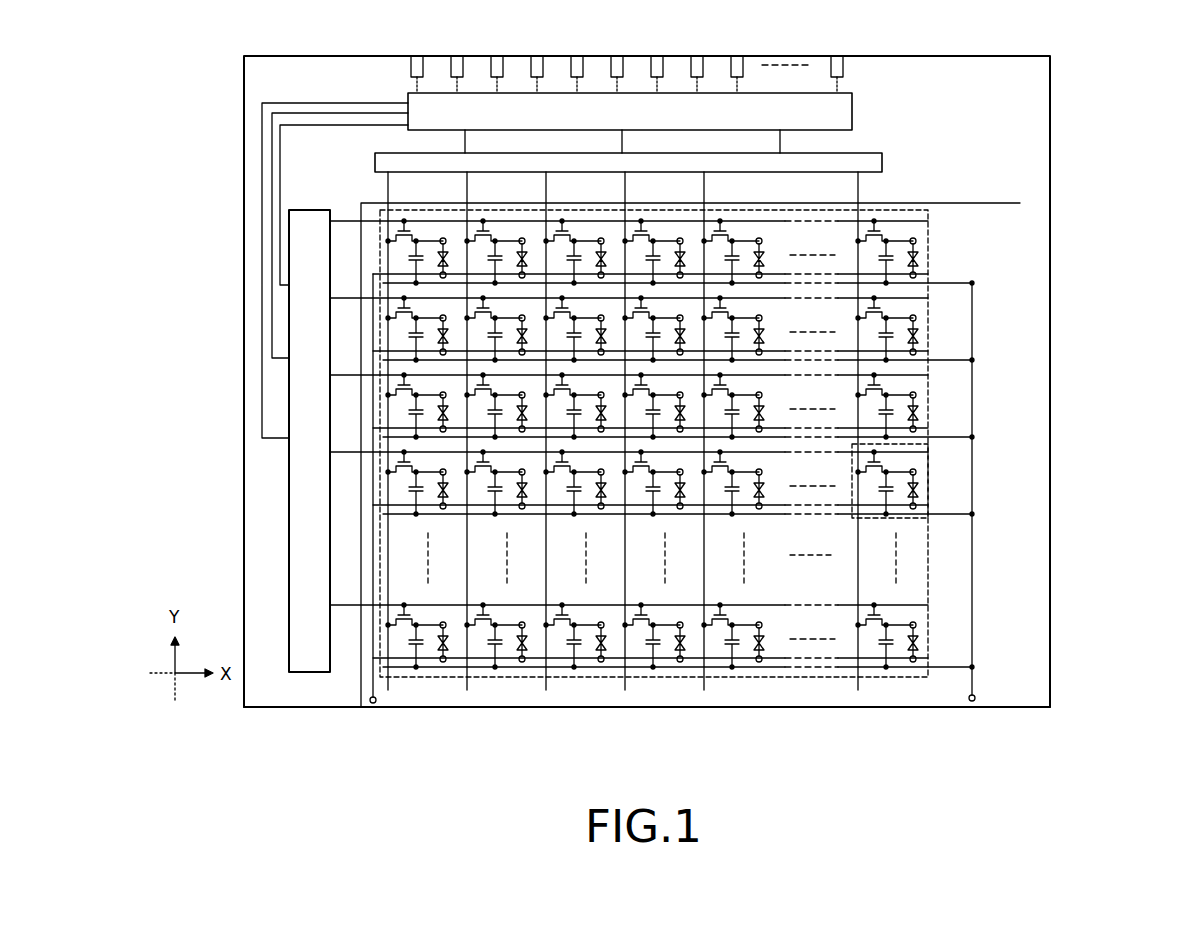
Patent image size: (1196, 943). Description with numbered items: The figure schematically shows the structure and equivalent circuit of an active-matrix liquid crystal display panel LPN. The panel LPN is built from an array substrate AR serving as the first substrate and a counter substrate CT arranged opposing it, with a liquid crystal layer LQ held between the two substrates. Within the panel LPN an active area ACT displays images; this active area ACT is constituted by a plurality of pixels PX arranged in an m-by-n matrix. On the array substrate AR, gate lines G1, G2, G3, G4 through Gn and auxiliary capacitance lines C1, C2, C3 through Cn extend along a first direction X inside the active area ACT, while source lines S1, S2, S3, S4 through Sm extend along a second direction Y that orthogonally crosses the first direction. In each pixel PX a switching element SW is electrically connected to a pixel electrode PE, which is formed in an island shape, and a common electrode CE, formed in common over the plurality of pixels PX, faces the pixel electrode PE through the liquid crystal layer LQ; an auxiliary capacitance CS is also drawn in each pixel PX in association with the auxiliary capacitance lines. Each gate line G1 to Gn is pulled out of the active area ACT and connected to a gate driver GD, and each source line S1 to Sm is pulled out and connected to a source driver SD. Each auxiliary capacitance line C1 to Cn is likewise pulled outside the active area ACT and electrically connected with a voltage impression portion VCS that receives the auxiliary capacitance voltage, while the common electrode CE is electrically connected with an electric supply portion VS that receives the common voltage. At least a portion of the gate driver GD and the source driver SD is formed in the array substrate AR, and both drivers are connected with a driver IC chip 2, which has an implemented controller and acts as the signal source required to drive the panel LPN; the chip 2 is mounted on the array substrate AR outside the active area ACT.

The driver IC chip 2 is at (852, 93).
The liquid crystal display panel LPN is at (1075, 67).
The array substrate AR is at (311, 707).
The counter substrate CT is at (1020, 203).
The active area ACT is at (928, 318).
The source driver SD is at (884, 160).
The gate driver GD is at (289, 545).
The gate line G1 is at (340, 221).
The gate line G2 is at (340, 298).
The gate line G3 is at (340, 375).
The gate line G4 is at (341, 452).
The gate line Gn is at (340, 605).
The source line S1 is at (392, 193).
The source line S2 is at (471, 193).
The source line S3 is at (550, 193).
The source line S4 is at (629, 193).
The source line Sm is at (862, 193).
The auxiliary capacitance line C1 is at (947, 283).
The auxiliary capacitance line C2 is at (947, 360).
The auxiliary capacitance line C3 is at (947, 437).
The auxiliary capacitance line Cn is at (950, 667).
The pixel PX is at (906, 490).
The switching element SW is at (856, 464).
The auxiliary capacitance CS is at (872, 488).
The pixel electrode PE is at (917, 472).
The liquid crystal layer LQ is at (919, 489).
The common electrode CE is at (918, 501).
The electric supply portion VS is at (380, 704).
The voltage impression portion VCS is at (975, 696).